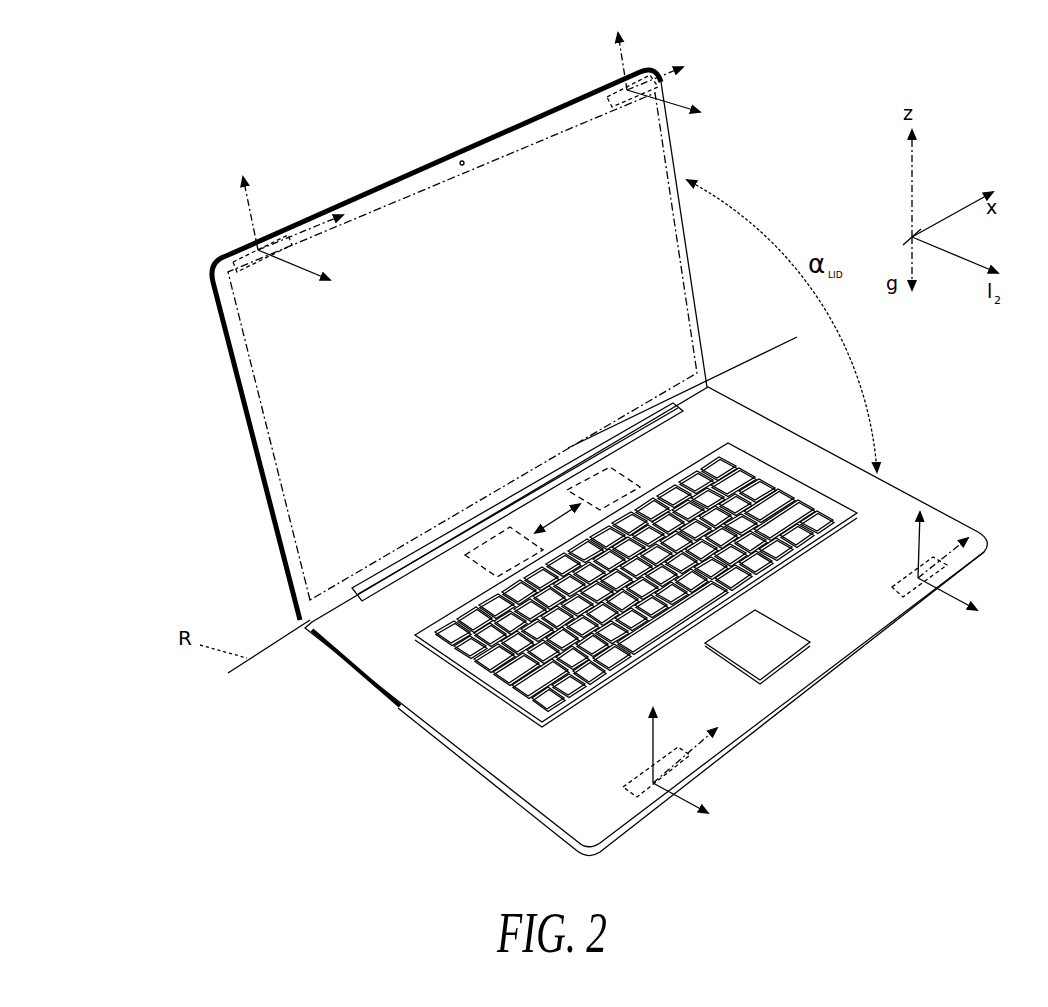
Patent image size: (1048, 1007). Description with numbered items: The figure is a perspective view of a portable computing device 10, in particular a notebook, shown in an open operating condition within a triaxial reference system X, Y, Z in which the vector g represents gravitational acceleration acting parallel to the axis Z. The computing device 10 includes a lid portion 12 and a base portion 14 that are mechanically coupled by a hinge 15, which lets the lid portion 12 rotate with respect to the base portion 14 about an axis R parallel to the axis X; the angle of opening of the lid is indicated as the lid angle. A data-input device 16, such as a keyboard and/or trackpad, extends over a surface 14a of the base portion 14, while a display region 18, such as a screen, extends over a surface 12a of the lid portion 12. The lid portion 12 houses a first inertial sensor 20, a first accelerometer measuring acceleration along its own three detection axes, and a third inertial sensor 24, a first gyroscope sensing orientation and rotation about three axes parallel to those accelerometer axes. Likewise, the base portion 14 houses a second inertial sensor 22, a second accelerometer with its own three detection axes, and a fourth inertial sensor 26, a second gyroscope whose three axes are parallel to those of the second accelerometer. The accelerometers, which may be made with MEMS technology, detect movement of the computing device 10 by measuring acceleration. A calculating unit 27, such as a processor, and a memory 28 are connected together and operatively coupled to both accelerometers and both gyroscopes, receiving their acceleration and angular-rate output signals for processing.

The computing device 10 is at (145, 185).
The lid portion 12 is at (245, 411).
The surface of the lid portion 12a is at (337, 395).
The base portion 14 is at (492, 769).
The surface of the base portion 14a is at (430, 692).
The hinge 15 is at (393, 598).
The data-input device 16 is at (766, 608).
The display region 18 is at (466, 382).
The first inertial sensor 20 is at (233, 247).
The second inertial sensor 22 is at (655, 795).
The third inertial sensor 24 is at (604, 96).
The fourth inertial sensor 26 is at (922, 606).
The calculating unit 27 is at (501, 530).
The memory 28 is at (576, 482).